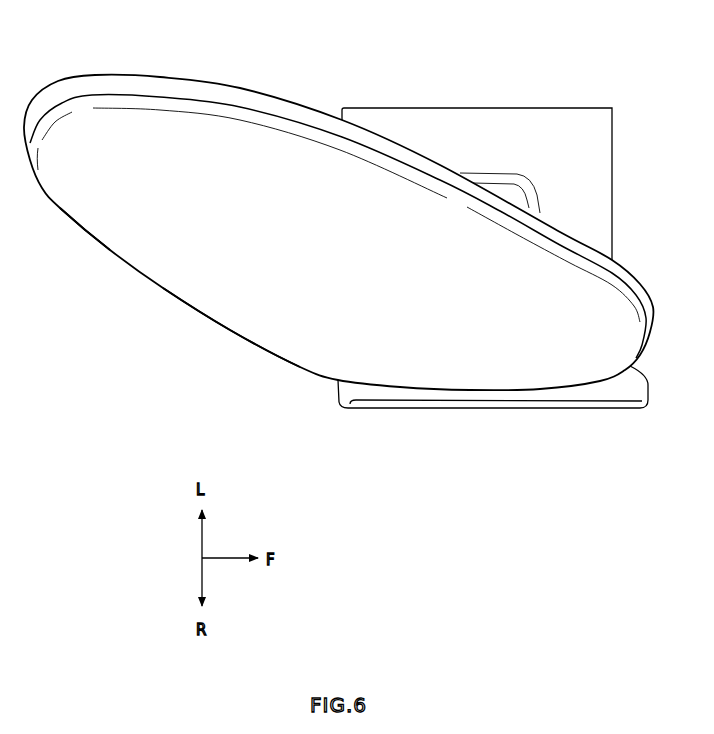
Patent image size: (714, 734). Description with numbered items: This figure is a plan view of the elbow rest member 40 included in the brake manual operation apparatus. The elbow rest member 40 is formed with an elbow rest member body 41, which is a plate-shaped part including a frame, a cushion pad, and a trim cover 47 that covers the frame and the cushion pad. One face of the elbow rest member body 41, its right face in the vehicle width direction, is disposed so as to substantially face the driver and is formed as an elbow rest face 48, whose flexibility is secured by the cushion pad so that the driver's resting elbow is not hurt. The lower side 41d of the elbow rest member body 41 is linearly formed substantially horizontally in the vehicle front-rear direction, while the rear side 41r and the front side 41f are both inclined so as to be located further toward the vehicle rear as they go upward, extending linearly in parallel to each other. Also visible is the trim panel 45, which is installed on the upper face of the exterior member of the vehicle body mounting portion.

The elbow rest member 40 is at (620, 85).
The elbow rest member body 41 is at (297, 367).
The front side 41f is at (582, 255).
The rear side 41r is at (128, 265).
The lower side 41d is at (487, 391).
The trim panel 45 is at (595, 171).
The trim cover 47 is at (182, 282).
The elbow rest face 48 is at (240, 297).